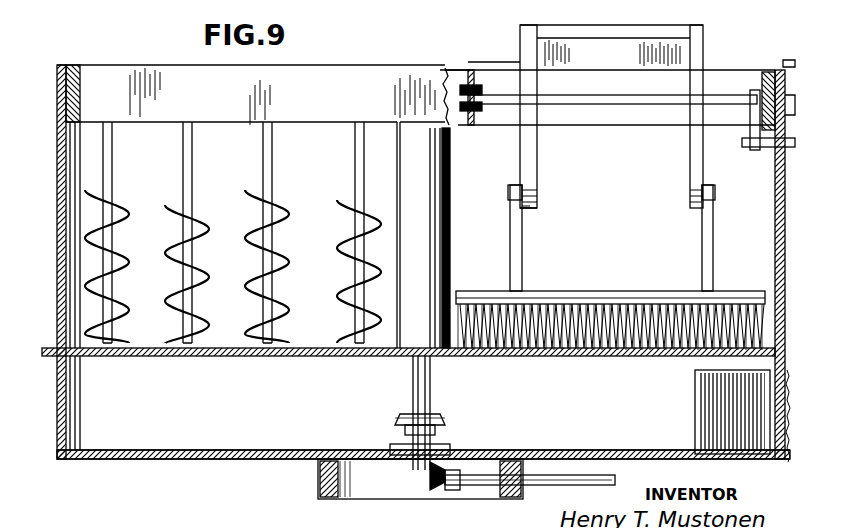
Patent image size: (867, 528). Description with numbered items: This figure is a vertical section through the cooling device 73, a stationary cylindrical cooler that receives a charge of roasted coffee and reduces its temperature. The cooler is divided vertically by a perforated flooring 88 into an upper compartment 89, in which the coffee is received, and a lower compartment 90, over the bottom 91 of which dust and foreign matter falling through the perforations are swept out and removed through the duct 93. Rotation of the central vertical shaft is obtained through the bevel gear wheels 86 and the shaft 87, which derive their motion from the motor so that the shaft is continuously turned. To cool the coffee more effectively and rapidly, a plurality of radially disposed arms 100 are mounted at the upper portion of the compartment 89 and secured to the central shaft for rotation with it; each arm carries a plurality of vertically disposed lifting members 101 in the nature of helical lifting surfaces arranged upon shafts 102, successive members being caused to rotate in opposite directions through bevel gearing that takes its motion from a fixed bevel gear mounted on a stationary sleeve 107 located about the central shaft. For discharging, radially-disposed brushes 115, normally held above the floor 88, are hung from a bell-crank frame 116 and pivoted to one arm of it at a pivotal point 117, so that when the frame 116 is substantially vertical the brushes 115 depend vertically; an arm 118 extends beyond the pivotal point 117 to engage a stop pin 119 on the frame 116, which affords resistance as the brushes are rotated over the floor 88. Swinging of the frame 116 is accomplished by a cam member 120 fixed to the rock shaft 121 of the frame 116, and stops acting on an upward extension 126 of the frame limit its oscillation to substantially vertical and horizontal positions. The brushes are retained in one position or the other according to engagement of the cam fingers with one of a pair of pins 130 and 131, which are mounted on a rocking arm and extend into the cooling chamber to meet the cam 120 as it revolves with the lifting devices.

The cooling device 73 is at (50, 220).
The radially disposed arms 100 is at (320, 78).
The shafts 102 is at (272, 182).
The lifting members 101 is at (257, 240).
The upper compartment 89 is at (238, 213).
The perforated flooring 88 is at (150, 343).
The stationary sleeve 107 is at (450, 240).
The radially-disposed brushes 115 is at (546, 358).
The bell-crank frame 116 is at (537, 155).
The arm 118 is at (517, 182).
The stop pin 119 is at (508, 186).
The pivotal point 117 is at (538, 212).
The upward extension 126 is at (617, 52).
The rock shaft 121 is at (635, 100).
The cam member 120 is at (752, 90).
The pin 131 is at (770, 150).
The pin 130 is at (785, 60).
The lower compartment 90 is at (420, 380).
The bottom 91 is at (205, 460).
The duct 93 is at (695, 400).
The bevel gear wheels 86 is at (418, 476).
The shaft 87 is at (485, 488).